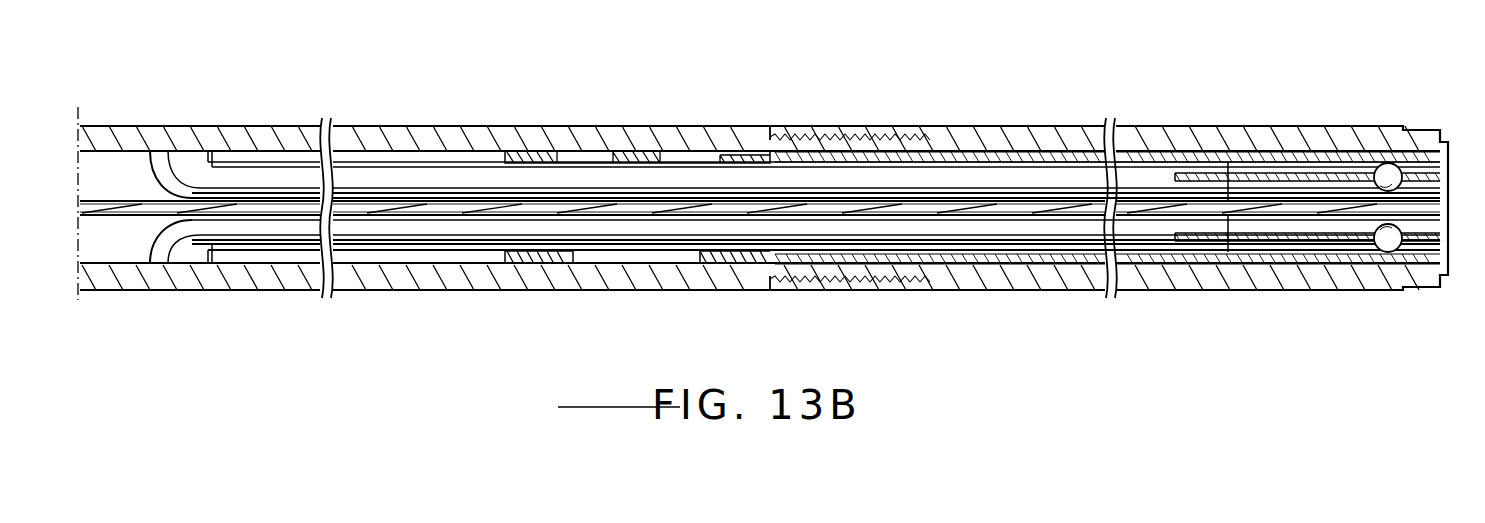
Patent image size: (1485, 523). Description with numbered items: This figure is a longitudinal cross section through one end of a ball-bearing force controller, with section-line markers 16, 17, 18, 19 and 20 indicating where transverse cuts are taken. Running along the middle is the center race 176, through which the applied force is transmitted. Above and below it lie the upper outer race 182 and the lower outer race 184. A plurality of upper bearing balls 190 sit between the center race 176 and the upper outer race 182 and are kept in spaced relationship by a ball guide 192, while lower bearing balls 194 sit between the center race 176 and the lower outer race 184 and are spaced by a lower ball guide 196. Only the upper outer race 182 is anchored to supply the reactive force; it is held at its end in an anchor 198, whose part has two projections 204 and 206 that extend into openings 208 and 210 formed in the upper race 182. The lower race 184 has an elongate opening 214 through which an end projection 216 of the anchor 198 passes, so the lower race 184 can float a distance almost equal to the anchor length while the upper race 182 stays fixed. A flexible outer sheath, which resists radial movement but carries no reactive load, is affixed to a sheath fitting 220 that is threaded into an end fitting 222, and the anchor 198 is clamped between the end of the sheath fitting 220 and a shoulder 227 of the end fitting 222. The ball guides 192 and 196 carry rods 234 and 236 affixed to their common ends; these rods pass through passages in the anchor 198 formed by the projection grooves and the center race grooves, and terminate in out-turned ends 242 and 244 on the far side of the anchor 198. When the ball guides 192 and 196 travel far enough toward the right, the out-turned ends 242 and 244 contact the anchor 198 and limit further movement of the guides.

The center race 176 is at (1056, 214).
The upper outer race 182 is at (890, 156).
The lower outer race 184 is at (976, 252).
The upper bearing balls 190 is at (1384, 164).
The ball guide 192 is at (1236, 166).
The lower bearing balls 194 is at (1390, 252).
The lower ball guide 196 is at (1240, 242).
The anchor 198 is at (575, 133).
The projection 204 is at (631, 160).
The projection 206 is at (736, 162).
The opening 208 is at (552, 156).
The opening 210 is at (672, 162).
The elongate opening 214 is at (572, 252).
The end projection 216 is at (708, 252).
The sheath fitting 220 is at (972, 126).
The end fitting 222 is at (381, 126).
The shoulder 227 is at (565, 150).
The rod 234 is at (842, 162).
The rod 236 is at (858, 246).
The out-turned end 242 is at (150, 150).
The out-turned end 244 is at (160, 264).
The section line 16- 16 is at (252, 343).
The section line 17- 17 is at (515, 343).
The section line 18- 18 is at (665, 343).
The section line 19- 19 is at (1170, 343).
The section line 20- 20 is at (1360, 343).